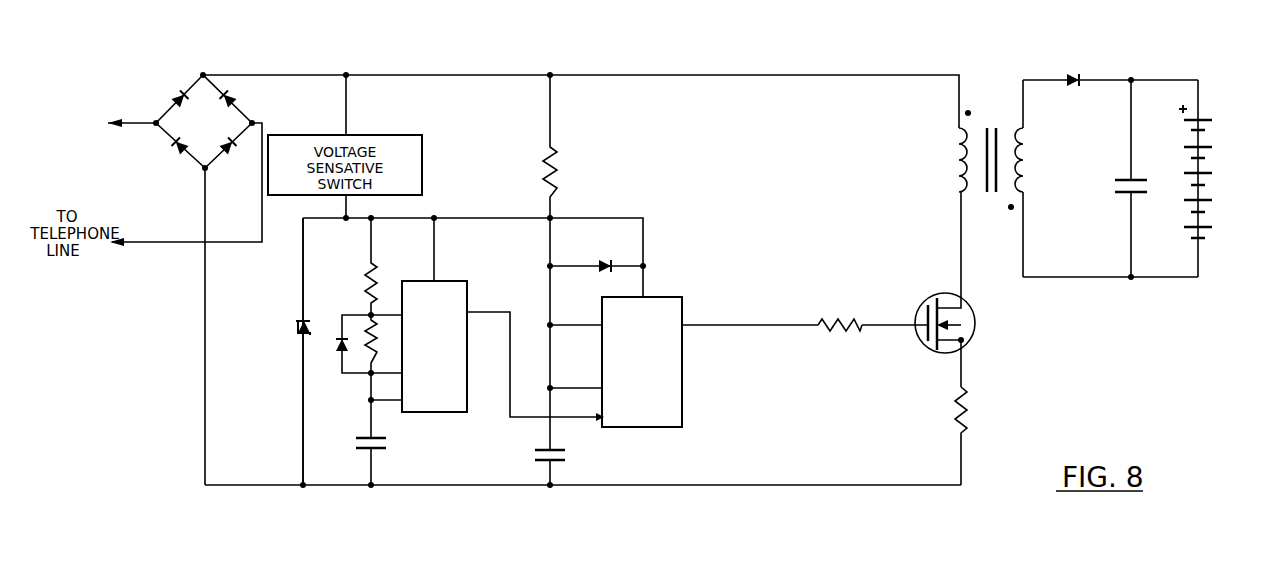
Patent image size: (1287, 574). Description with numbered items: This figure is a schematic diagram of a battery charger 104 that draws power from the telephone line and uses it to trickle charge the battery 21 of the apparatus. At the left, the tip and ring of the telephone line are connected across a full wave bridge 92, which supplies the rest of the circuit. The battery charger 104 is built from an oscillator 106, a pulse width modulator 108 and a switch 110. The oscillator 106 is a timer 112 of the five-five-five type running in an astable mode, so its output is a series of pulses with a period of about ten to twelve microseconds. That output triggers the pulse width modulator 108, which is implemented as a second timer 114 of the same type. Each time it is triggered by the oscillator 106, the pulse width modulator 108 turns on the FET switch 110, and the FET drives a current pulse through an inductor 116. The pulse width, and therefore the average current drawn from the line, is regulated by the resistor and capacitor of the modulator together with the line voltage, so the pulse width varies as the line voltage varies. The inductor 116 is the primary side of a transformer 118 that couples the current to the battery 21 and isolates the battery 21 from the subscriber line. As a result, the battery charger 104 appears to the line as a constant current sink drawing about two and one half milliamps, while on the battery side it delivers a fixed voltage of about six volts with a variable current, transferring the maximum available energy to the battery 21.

The full wave bridge 92 is at (197, 93).
The battery charger 104 is at (869, 487).
The oscillator 106 is at (402, 377).
The pulse width modulator 108 is at (644, 324).
The switch 110 is at (978, 338).
The 555 timer 112 is at (445, 410).
The second 555 timer 114 is at (677, 389).
The inductor 116 is at (957, 162).
The transformer 118 is at (988, 120).
The battery 21 is at (1207, 143).